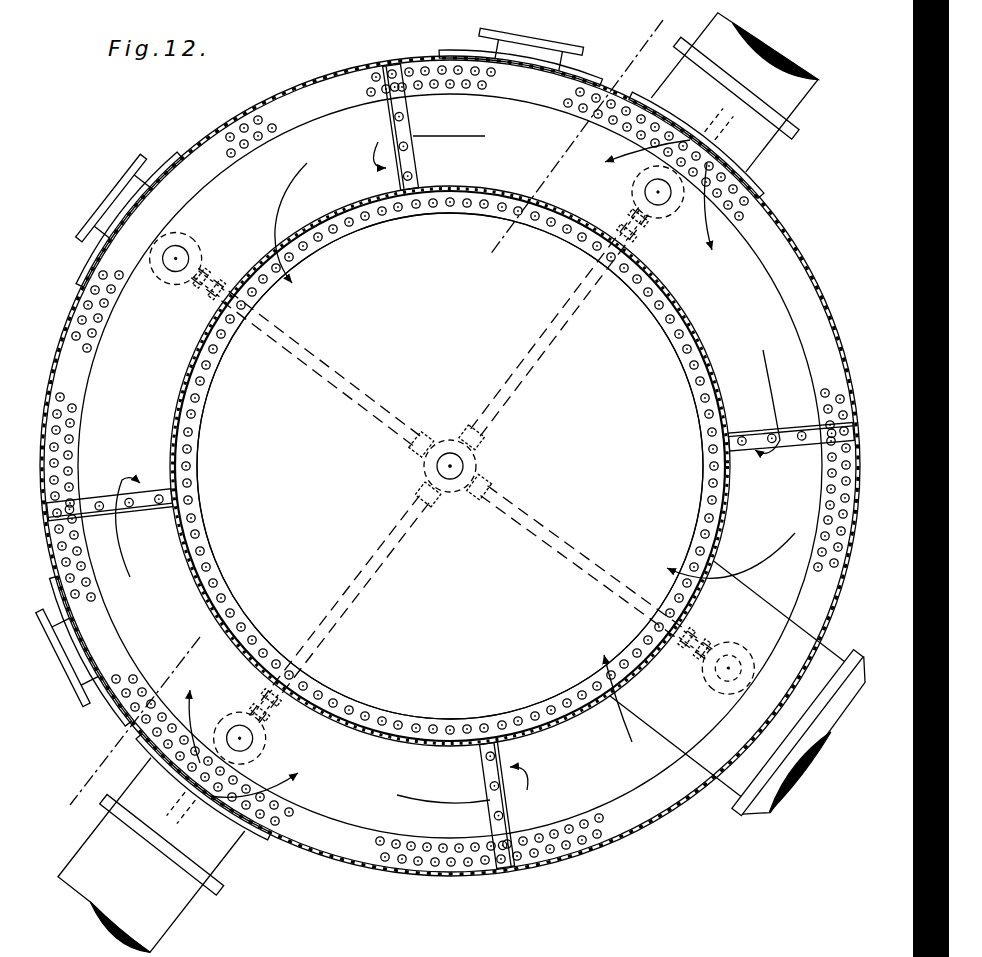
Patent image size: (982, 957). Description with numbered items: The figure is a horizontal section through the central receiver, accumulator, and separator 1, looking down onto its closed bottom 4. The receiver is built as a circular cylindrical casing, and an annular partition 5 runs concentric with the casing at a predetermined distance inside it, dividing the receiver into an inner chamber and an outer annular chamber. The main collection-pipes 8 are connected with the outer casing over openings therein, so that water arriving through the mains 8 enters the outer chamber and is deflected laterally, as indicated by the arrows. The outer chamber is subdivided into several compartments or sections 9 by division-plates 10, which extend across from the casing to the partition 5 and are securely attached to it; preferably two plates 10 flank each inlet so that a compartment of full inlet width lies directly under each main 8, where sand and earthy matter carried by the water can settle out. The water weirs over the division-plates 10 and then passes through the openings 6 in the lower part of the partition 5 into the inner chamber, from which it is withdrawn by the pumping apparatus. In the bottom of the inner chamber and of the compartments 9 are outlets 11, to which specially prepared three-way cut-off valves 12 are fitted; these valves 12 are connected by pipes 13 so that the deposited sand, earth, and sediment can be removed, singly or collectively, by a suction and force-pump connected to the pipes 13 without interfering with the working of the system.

The central receiver, accumulator, and separator 1 is at (450, 466).
The bottom 4 is at (450, 466).
The annular partition 5 is at (735, 383).
The openings 6 is at (318, 232).
The main collection-pipes 8 is at (457, 478).
The compartments or sections 9 is at (450, 466).
The division-plates 10 is at (405, 126).
The outlets 11 is at (172, 262).
The three-way cut-off valves 12 is at (363, 402).
The pipes 13 is at (388, 358).